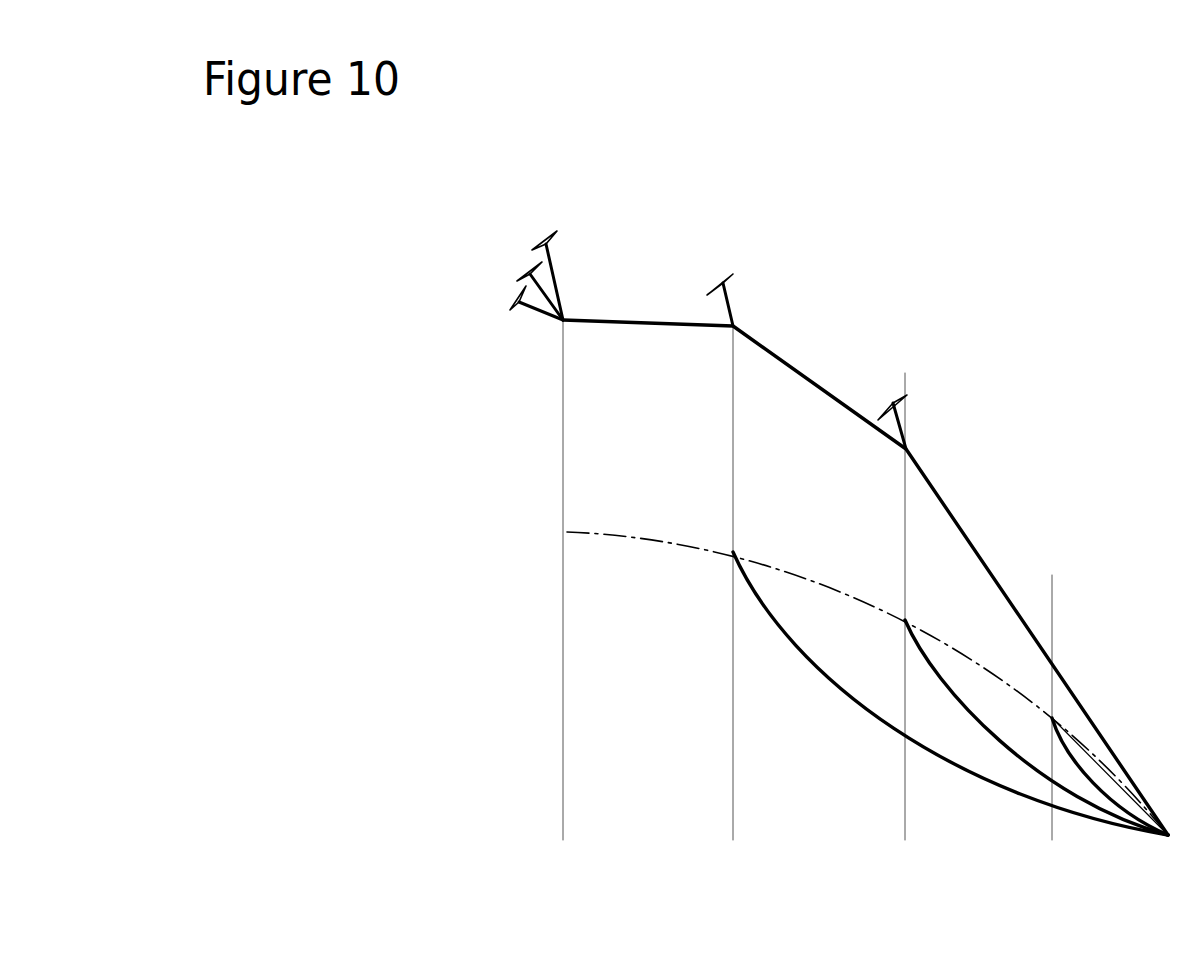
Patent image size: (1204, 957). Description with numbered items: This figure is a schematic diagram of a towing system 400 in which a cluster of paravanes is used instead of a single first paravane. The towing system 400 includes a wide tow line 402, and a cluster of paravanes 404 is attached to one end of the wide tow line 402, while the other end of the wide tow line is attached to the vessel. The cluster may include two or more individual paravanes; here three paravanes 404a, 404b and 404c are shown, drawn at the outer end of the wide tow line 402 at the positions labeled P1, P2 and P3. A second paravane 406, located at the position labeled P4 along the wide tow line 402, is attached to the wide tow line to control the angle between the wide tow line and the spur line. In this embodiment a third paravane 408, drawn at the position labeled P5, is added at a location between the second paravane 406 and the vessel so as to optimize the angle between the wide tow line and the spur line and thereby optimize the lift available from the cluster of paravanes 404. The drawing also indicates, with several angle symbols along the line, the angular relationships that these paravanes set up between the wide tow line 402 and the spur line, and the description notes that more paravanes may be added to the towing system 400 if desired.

The towing system 400 is at (988, 243).
The wide tow line 402 is at (958, 502).
The cluster of paravanes 404 is at (474, 210).
The paravane 404a is at (546, 237).
The paravane 404b is at (519, 277).
The paravane 404c is at (512, 308).
The second paravane 406 is at (738, 287).
The third paravane 408 is at (919, 402).
The point P1 is at (562, 259).
The point P2 is at (525, 283).
The point P3 is at (515, 303).
The point P4 is at (714, 316).
The point P5 is at (911, 422).